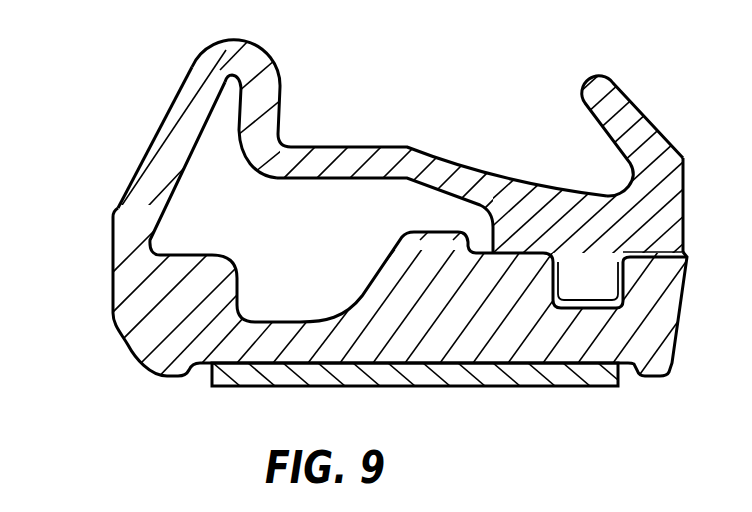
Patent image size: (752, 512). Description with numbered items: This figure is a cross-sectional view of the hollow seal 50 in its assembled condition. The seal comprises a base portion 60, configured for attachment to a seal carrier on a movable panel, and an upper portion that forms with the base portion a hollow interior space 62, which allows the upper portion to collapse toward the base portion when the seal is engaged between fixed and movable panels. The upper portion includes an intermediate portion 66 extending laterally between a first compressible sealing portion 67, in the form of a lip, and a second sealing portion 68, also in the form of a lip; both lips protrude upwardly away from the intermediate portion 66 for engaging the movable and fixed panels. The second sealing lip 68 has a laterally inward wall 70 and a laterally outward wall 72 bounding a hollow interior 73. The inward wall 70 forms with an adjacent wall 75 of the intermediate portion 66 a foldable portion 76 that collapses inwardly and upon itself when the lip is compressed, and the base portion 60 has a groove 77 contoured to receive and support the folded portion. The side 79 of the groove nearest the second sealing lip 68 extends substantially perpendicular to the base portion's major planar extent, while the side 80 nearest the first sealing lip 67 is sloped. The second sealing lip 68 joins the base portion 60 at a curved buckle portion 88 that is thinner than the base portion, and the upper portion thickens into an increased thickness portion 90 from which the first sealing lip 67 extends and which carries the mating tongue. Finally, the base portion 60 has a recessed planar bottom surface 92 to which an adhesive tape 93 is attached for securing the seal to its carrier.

The hollow seal 50 is at (128, 390).
The base portion 60 is at (521, 329).
The hollow interior space 62 is at (193, 192).
The intermediate portion 66 is at (346, 181).
The first compressible sealing portion 67 is at (623, 92).
The second sealing portion 68 is at (190, 70).
The laterally inward wall 70 is at (282, 92).
The laterally outward wall 72 is at (167, 105).
The hollow interior 73 is at (218, 120).
The adjacent wall 75 is at (345, 147).
The foldable portion 76 is at (267, 178).
The groove 77 is at (325, 270).
The side of the groove 79 is at (243, 293).
The side of the groove 80 is at (373, 267).
The curved buckle portion 88 is at (112, 218).
The increased thickness portion 90 is at (542, 210).
The planar bottom surface 92 is at (283, 372).
The adhesive tape 93 is at (458, 378).